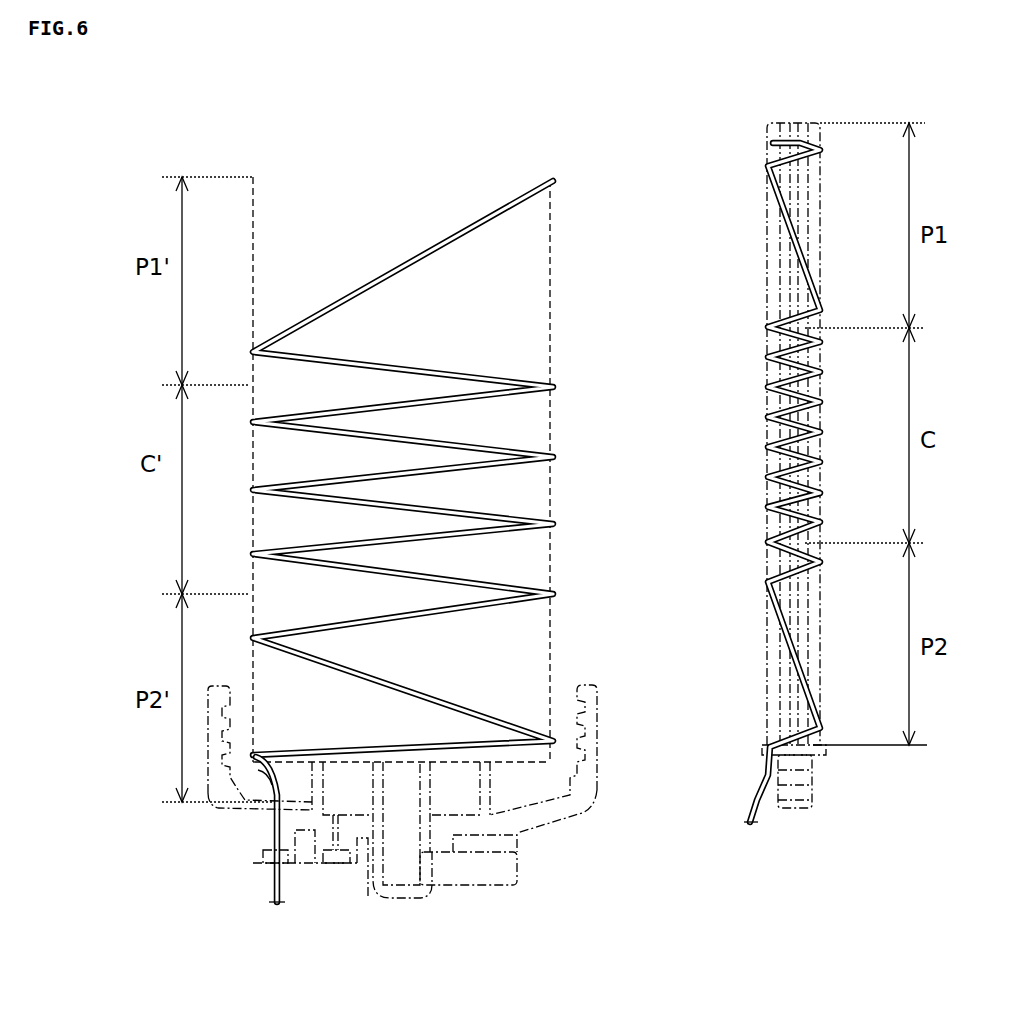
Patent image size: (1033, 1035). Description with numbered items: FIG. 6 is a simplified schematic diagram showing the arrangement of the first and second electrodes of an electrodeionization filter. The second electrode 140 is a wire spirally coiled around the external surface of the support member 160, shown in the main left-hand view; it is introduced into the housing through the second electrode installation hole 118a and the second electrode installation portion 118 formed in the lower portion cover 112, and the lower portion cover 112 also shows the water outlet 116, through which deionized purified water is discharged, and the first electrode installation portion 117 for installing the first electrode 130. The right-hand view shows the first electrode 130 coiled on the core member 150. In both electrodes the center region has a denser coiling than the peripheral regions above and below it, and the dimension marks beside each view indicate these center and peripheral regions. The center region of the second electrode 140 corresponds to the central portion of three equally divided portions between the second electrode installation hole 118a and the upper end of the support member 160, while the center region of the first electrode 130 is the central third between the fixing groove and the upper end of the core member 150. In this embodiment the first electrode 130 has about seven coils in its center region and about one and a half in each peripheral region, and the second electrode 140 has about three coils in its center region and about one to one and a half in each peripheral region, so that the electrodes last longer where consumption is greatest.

The lower portion cover 112 is at (568, 812).
The water outlet 116 is at (490, 870).
The first electrode installation portion 117 is at (330, 835).
The second electrode installation portion 118 is at (264, 858).
The second electrode installation hole 118a is at (258, 793).
The first electrode 130 is at (777, 397).
The second electrode 140 is at (462, 227).
The core member 150 is at (767, 287).
The support member 160 is at (370, 190).